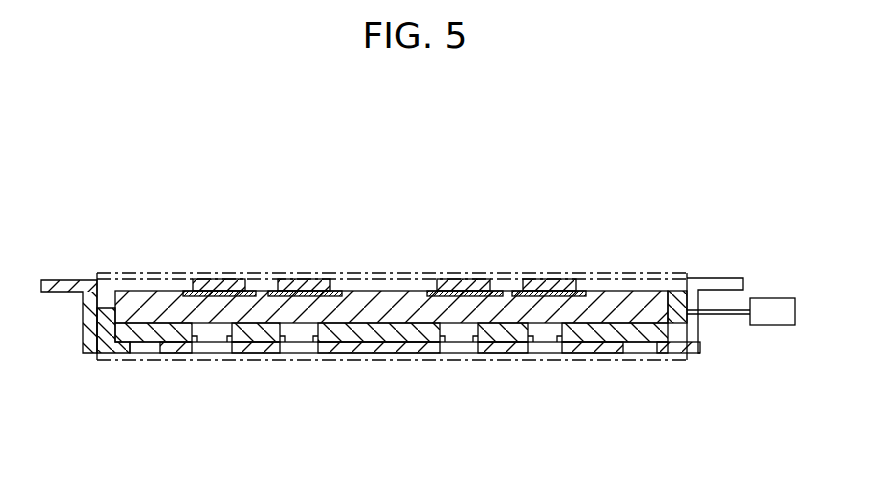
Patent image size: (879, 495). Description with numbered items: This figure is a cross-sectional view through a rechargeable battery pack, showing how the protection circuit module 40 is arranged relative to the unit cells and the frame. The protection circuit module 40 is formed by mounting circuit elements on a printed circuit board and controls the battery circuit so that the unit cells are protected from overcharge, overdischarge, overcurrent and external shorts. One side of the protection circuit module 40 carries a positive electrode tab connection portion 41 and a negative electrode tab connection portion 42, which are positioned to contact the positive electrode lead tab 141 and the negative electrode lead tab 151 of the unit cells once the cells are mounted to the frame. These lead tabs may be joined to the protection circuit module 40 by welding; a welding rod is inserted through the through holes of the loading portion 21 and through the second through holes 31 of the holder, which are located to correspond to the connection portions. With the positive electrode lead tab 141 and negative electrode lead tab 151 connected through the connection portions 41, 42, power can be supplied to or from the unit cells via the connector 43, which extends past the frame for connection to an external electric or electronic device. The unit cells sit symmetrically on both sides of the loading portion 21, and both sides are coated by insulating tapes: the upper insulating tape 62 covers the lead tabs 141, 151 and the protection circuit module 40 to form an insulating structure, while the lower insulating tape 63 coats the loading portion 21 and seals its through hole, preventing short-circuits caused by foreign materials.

The loading portion 21 is at (537, 349).
The second through holes 31 is at (548, 335).
The protection circuit module 40 is at (648, 306).
The positive electrode tab connection portion 41 is at (453, 260).
The positive electrode lead tab 141 is at (470, 280).
The negative electrode lead tab 151 is at (553, 280).
The negative electrode tab connection portion 42 is at (586, 291).
The connector 43 is at (770, 298).
The upper insulating tape 62 is at (162, 279).
The lower insulating tape 63 is at (162, 360).